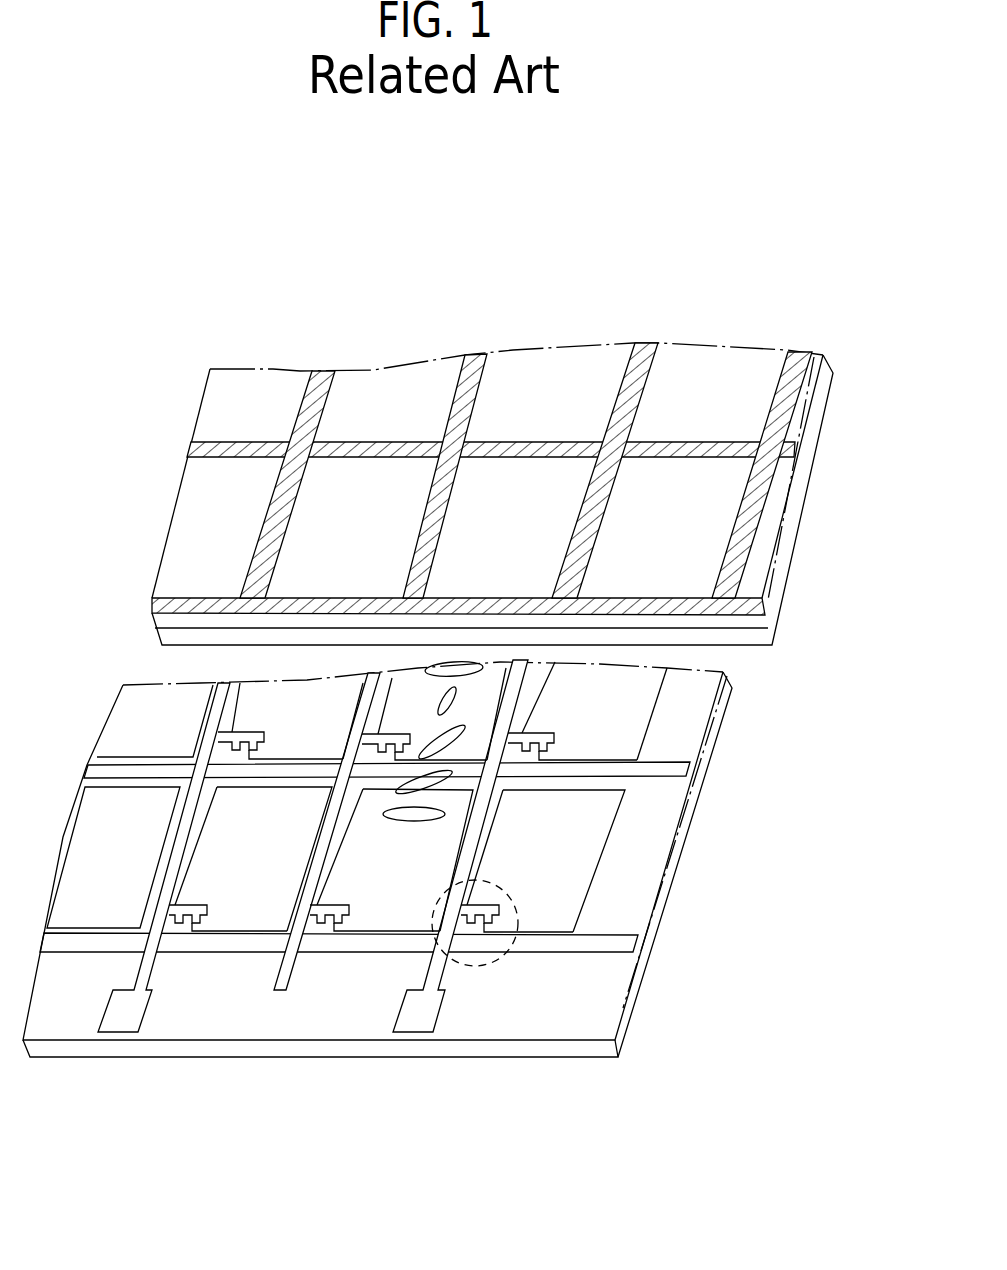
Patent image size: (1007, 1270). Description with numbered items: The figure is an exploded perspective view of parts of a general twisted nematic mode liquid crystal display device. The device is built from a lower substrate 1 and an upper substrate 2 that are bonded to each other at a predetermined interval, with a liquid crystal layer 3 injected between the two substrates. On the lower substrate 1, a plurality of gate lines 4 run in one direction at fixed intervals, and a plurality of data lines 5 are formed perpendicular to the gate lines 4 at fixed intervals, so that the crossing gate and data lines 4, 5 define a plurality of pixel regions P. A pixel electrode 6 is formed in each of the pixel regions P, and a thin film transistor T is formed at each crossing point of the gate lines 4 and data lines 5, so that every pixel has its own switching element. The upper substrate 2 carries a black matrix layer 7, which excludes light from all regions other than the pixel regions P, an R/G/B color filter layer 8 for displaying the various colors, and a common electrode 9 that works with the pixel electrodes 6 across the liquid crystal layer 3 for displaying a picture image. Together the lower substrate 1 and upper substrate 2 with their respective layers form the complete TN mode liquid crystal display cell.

The lower substrate 1 is at (575, 1048).
The upper substrate 2 is at (752, 622).
The liquid crystal layer 3 is at (450, 733).
The gate lines 4 is at (590, 948).
The data lines 5 is at (427, 975).
The pixel electrodes 6 is at (598, 875).
The black matrix layer 7 is at (798, 449).
The R/G/B color filter layer 8 is at (774, 522).
The common electrode 9 is at (755, 638).
The pixel regions P is at (643, 825).
The thin film transistors T is at (477, 968).